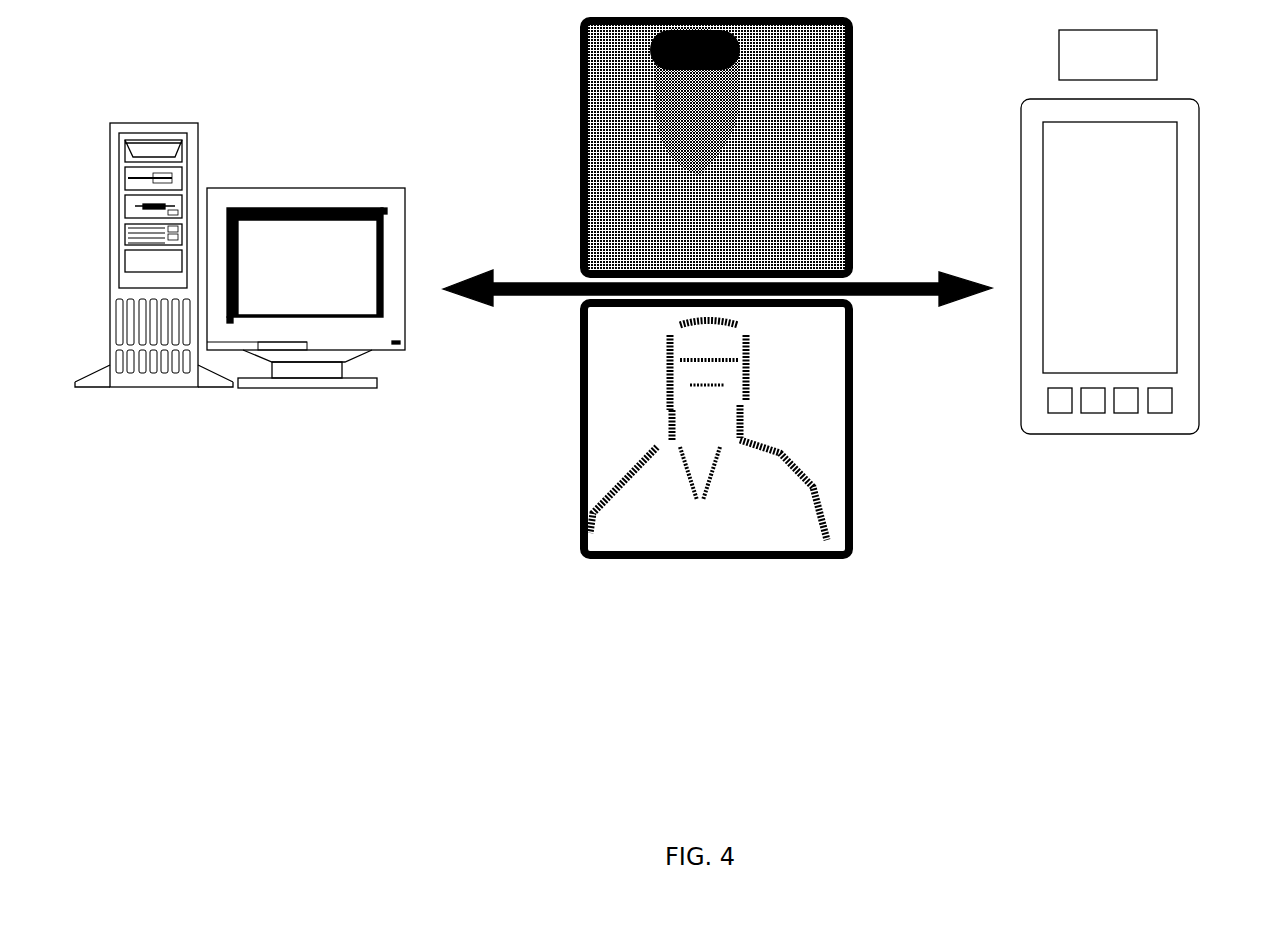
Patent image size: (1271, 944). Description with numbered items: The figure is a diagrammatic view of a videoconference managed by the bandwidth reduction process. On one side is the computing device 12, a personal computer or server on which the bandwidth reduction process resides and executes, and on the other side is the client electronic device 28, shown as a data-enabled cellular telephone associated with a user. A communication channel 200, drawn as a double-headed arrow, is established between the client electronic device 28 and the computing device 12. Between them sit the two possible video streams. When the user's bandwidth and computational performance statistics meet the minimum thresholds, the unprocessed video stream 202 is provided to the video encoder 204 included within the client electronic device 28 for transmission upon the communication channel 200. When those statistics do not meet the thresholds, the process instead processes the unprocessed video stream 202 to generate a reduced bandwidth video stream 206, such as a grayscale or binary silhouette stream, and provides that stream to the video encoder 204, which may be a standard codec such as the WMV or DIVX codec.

The computing device 12 is at (198, 158).
The communication channel 200 is at (533, 280).
The unprocessed video stream 202 is at (565, 85).
The video encoder 204 is at (1108, 55).
The client electronic device 28 is at (1199, 148).
The reduced bandwidth video stream 206 is at (565, 455).